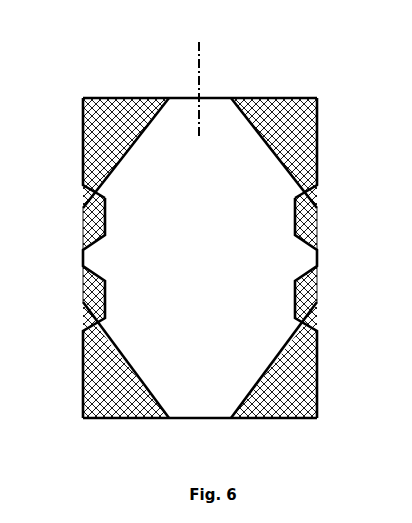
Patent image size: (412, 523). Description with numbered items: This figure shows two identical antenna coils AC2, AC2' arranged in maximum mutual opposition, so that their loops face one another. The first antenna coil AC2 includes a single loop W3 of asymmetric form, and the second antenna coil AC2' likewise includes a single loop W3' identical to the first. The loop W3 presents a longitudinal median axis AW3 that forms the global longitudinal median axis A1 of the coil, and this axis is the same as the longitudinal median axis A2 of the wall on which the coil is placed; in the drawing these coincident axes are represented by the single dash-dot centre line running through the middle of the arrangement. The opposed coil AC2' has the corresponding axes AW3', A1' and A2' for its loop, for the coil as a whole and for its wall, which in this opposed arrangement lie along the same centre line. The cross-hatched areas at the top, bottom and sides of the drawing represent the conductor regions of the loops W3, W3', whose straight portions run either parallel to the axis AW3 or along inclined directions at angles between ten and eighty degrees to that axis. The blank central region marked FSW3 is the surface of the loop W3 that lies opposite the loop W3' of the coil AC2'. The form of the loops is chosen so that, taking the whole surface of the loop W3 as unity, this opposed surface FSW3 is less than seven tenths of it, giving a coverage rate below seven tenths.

The antenna coil AC2 is at (274, 156).
The antenna coil AC2' is at (126, 156).
The loop W3 is at (301, 270).
The loop W3' is at (97, 270).
The surface of the loop W3 opposite the loop W3' FSW3 is at (223, 204).
The global longitudinal median axis of the coil A1 is at (297, 82).
The global longitudinal median axis of the coil A1' is at (297, 82).
The longitudinal median axis of the wall A2 is at (297, 82).
The longitudinal median axis of the wall A2' is at (297, 82).
The longitudinal median axis of the loop AW3 is at (297, 82).
The longitudinal median axis of the loop AW3' is at (297, 82).